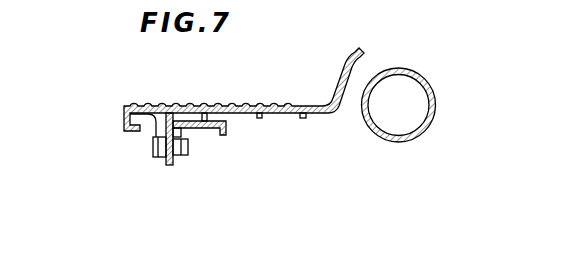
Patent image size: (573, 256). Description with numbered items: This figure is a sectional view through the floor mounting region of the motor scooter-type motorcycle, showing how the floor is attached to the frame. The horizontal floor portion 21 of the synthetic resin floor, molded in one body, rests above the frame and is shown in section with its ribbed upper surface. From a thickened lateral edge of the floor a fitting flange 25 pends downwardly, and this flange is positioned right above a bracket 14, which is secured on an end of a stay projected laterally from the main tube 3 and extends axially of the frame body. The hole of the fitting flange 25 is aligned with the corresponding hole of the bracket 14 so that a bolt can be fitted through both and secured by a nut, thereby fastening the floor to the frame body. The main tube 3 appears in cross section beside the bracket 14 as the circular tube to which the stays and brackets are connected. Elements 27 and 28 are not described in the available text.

The main tube 3 is at (417, 140).
The bracket 14 is at (202, 129).
The horizontal floor portion 21 is at (294, 102).
The fitting flange 25 is at (161, 165).
The clip 27 is at (153, 153).
The nut 28 is at (188, 158).